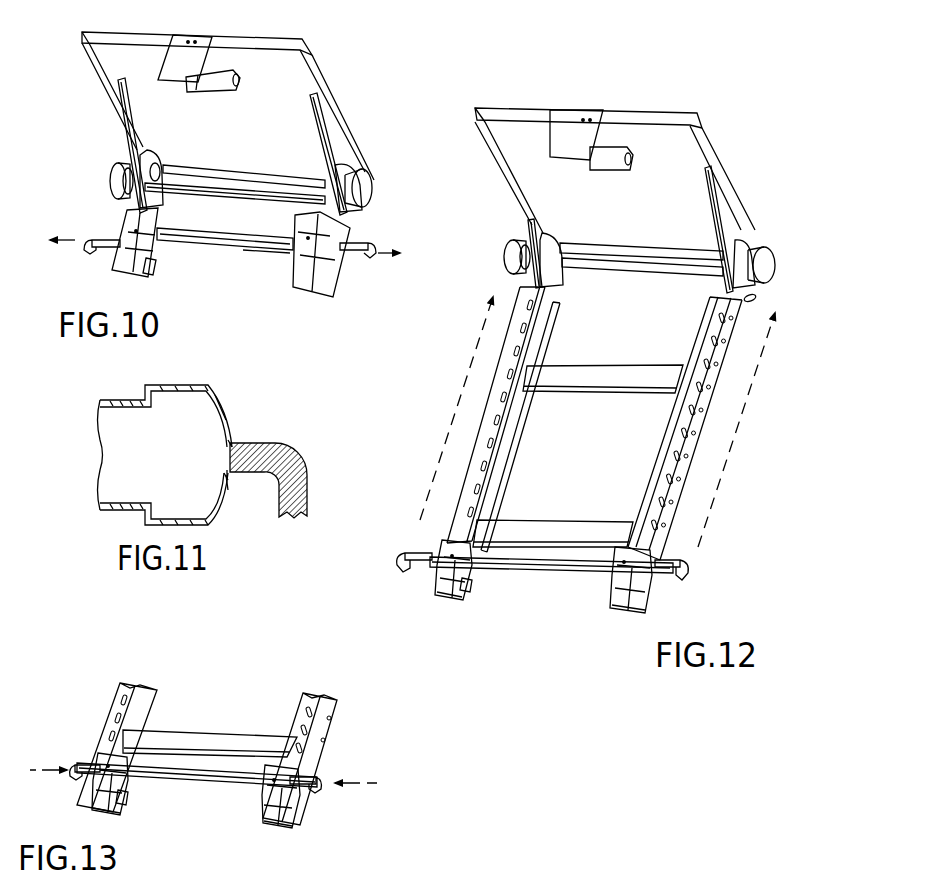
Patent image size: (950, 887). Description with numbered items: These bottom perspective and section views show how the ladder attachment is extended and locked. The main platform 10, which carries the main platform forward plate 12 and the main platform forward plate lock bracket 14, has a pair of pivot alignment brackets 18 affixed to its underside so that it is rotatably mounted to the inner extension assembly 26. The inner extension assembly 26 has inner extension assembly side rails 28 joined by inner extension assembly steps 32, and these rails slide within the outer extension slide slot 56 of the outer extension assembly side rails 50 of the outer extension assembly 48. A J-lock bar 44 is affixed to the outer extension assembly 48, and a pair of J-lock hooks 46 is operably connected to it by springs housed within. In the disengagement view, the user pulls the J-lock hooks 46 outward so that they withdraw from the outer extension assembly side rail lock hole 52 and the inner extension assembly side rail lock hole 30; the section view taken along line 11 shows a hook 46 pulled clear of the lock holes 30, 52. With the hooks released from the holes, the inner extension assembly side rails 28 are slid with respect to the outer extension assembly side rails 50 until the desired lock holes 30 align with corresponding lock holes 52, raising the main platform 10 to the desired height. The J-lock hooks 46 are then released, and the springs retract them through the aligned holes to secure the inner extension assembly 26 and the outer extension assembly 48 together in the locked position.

In FIG. 10, the main platform 10 is at (268, 73).
In FIG. 12, the main platform 10 is at (648, 142).
In FIG. 10, the section line 11- 11 is at (245, 250).
In FIG. 12, the section line 11- 11 is at (405, 275).
In FIG. 10, the main platform forward plate 12 is at (177, 48).
In FIG. 12, the main platform forward plate 12 is at (568, 122).
In FIG. 10, the main platform forward plate lock bracket 14 is at (207, 82).
In FIG. 12, the main platform forward plate lock bracket 14 is at (607, 160).
In FIG. 10, the pivot alignment bracket 18 is at (148, 157).
In FIG. 12, the pivot alignment bracket 18 is at (545, 233).
In FIG. 10, the inner extension assembly 26 is at (120, 212).
In FIG. 12, the inner extension assembly 26 is at (680, 545).
In FIG. 13, the inner extension assembly 26 is at (337, 733).
In FIG. 11, the inner extension assembly side rail 28 is at (230, 413).
In FIG. 12, the inner extension assembly side rail 28 is at (475, 470).
In FIG. 13, the inner extension assembly side rail 28 is at (115, 705).
In FIG. 11, the inner extension assembly side rail lock hole 30 is at (228, 445).
In FIG. 12, the inner extension assembly side rail lock hole 30 is at (688, 490).
In FIG. 12, the inner extension assembly step 32 is at (573, 378).
In FIG. 10, the J-lock bar 44 is at (195, 232).
In FIG. 12, the J-lock bar 44 is at (518, 565).
In FIG. 13, the J-lock bar 44 is at (225, 785).
In FIG. 10, the J-lock hook 46 is at (95, 235).
In FIG. 11, the J-lock hook 46 is at (308, 483).
In FIG. 12, the J-lock hook 46 is at (408, 555).
In FIG. 13, the J-lock hook 46 is at (75, 780).
In FIG. 10, the outer extension assembly 48 is at (118, 267).
In FIG. 12, the outer extension assembly 48 is at (425, 595).
In FIG. 13, the outer extension assembly 48 is at (100, 812).
In FIG. 11, the outer extension assembly side rail 50 is at (228, 490).
In FIG. 12, the outer extension assembly side rail 50 is at (455, 597).
In FIG. 13, the outer extension assembly side rail 50 is at (123, 813).
In FIG. 11, the outer extension assembly side rail lock hole 52 is at (225, 483).
In FIG. 10, the outer extension slide slot 56 is at (148, 265).
In FIG. 11, the outer extension slide slot 56 is at (226, 398).
In FIG. 12, the outer extension slide slot 56 is at (462, 583).
In FIG. 13, the outer extension slide slot 56 is at (118, 797).